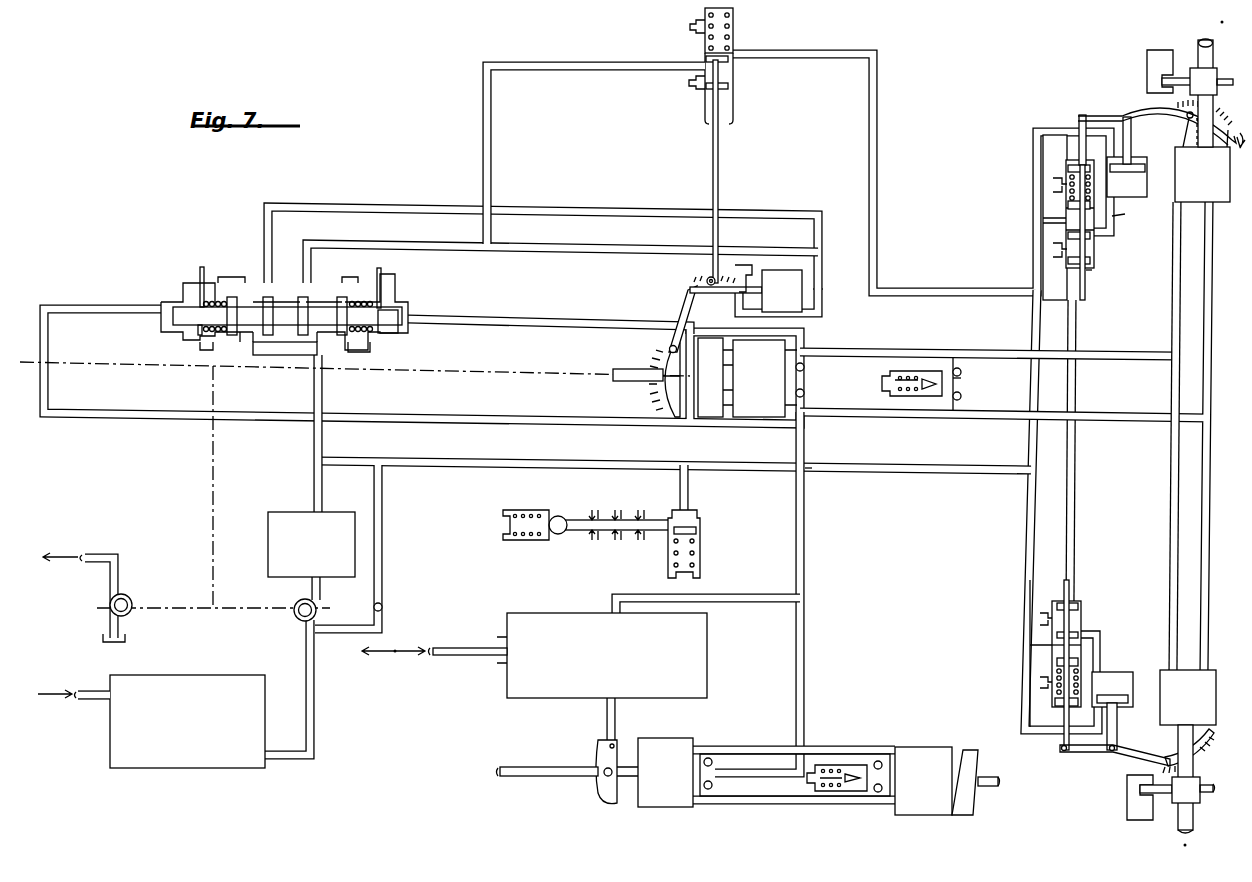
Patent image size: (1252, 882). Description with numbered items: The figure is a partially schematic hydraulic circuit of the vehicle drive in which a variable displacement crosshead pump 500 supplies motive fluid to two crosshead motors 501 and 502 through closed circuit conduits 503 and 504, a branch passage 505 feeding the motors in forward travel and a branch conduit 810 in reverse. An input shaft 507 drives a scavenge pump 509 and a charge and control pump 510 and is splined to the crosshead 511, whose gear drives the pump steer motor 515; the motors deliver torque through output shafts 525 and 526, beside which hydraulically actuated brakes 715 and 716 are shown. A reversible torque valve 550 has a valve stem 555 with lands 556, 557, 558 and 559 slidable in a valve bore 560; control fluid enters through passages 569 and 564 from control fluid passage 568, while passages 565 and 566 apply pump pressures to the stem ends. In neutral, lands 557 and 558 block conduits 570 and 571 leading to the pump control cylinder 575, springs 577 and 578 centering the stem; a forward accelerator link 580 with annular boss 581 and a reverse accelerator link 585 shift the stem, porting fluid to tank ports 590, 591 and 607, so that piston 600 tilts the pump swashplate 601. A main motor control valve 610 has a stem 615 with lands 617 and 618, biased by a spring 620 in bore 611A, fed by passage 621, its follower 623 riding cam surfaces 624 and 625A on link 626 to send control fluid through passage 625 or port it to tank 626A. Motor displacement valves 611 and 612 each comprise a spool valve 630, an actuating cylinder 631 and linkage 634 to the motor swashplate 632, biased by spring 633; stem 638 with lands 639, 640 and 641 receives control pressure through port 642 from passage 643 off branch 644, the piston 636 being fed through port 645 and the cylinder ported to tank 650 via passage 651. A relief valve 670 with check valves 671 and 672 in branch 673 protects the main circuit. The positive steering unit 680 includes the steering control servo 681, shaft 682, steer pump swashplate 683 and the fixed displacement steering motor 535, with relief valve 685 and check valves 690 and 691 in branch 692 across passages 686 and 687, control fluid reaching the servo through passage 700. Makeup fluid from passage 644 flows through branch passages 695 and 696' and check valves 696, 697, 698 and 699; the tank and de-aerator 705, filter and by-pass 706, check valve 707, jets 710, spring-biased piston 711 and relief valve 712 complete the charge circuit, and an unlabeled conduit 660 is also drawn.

The variable displacement crosshead pump 500 is at (701, 375).
The crosshead-type variable displacement motor 501 is at (1150, 722).
The crosshead-type variable displacement motor 502 is at (1210, 167).
The closed circuit conduit 503 is at (944, 385).
The closed circuit conduit 504 is at (925, 348).
The branch passage 505 is at (1172, 300).
The input shaft 507 is at (62, 366).
The scavenge pump 509 is at (129, 598).
The charge and control pump 510 is at (296, 618).
The crosshead 511 is at (715, 330).
The pump steer motor 515 is at (665, 740).
The output shaft 525 is at (1160, 828).
The output shaft 526 is at (1199, 55).
The steering motor 535 is at (952, 750).
The reversible torque valve 550 is at (276, 318).
The valve stem 555 is at (175, 309).
The annular land 556 is at (238, 345).
The annular land 557 is at (266, 297).
The annular land 558 is at (306, 297).
The annular land 559 is at (350, 352).
The valve bore 560 is at (230, 297).
The passage 564 is at (330, 358).
The passage 565 is at (48, 312).
The passage 566 is at (546, 325).
The control fluid passage 568 is at (324, 445).
The passage 569 is at (257, 356).
The conduit 570 is at (358, 207).
The conduit 571 is at (417, 247).
The pump control cylinder 575 is at (820, 316).
The spring 577 is at (206, 302).
The spring 578 is at (384, 310).
The forward accelerator link 580 is at (202, 267).
The annular boss 581 is at (198, 333).
The reverse accelerator link 585 is at (381, 276).
The tank port 590 is at (278, 356).
The tank port 591 is at (208, 350).
The piston 600 is at (796, 290).
The pump swashplate 601 is at (660, 400).
The tank port 607 is at (372, 348).
The main motor control valve 610 is at (733, 48).
The motor displacement valve 611 is at (1045, 240).
The valve bore 611A is at (705, 56).
The motor displacement valve 612 is at (1045, 663).
The valve stem 615 is at (712, 128).
The land 617 is at (729, 89).
The land 618 is at (729, 62).
The spring 620 is at (733, 22).
The passage 621 is at (600, 58).
The follower 623 is at (715, 282).
The cam surface 624 is at (690, 289).
The passage 625 is at (837, 54).
The cam surface 625A is at (752, 278).
The link 626 is at (690, 302).
The tank 626A is at (690, 26).
The spool valve 630 is at (1118, 246).
The actuating cylinder 631 is at (1148, 170).
The motor swashplate 632 is at (1186, 118).
The spring 633 is at (1068, 173).
The linkage 634 is at (1078, 118).
The piston 636 is at (1128, 173).
The stem 638 is at (1090, 264).
The land 639 is at (1088, 275).
The land 640 is at (1092, 236).
The land 641 is at (1068, 206).
The port 642 is at (1053, 232).
The passage 643 is at (1028, 455).
The branch passage 644 is at (478, 460).
The port 645 is at (1126, 118).
The tank 650 is at (1053, 255).
The passage 651 is at (1141, 208).
The conduit 660 is at (1078, 336).
The high pressure relief valve 670 is at (908, 397).
The check valve 671 is at (961, 370).
The check valve 672 is at (961, 397).
The branch 673 is at (965, 378).
The positive steering unit 680 is at (799, 742).
The steering control servo 681 is at (515, 700).
The shaft 682 is at (470, 660).
The steer pump swashplate 683 is at (597, 762).
The high pressure relief valve 685 is at (830, 764).
The passage 686 is at (760, 746).
The passage 687 is at (785, 806).
The check valve 690 is at (879, 760).
The check valve 691 is at (878, 793).
The branch 692 is at (888, 790).
The branch passage 695 is at (808, 466).
The check valve 696 is at (825, 360).
The branch passage 696' is at (791, 592).
The check valve 697 is at (804, 393).
The check valve 698 is at (710, 757).
The check valve 699 is at (710, 790).
The passage 700 is at (708, 598).
The tank and de-aerator 705 is at (192, 677).
The filter and by-pass 706 is at (296, 515).
The check valve 707 is at (382, 602).
The jets 710 is at (626, 524).
The spring-biased piston 711 is at (698, 530).
The relief valve 712 is at (558, 516).
The hydraulically actuated brake 715 is at (1158, 52).
The hydraulically actuated brake 716 is at (1127, 794).
The branch conduit 810 is at (1203, 380).